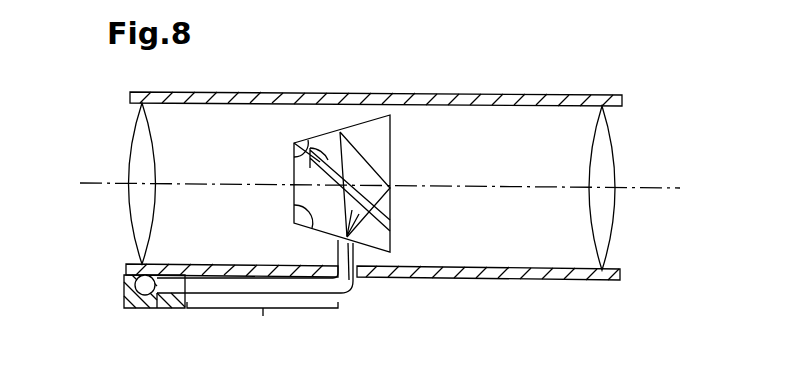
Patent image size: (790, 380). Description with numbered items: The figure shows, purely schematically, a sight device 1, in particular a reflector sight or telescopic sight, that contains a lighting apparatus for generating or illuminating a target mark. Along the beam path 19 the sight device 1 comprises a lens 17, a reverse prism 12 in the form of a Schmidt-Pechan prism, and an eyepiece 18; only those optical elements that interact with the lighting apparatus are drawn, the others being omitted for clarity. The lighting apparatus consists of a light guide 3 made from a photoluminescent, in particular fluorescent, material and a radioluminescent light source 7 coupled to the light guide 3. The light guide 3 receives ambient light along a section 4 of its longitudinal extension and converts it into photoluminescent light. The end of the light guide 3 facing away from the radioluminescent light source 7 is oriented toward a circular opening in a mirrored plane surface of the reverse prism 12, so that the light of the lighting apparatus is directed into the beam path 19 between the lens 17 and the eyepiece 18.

The sight device 1 is at (597, 84).
The light guide 3 is at (340, 287).
The section 4 is at (262, 321).
The radioluminescent light source 7 is at (143, 292).
The reverse prism 12 is at (398, 148).
The lens 17 is at (607, 217).
The eyepiece 18 is at (131, 218).
The beam path 19 is at (105, 182).